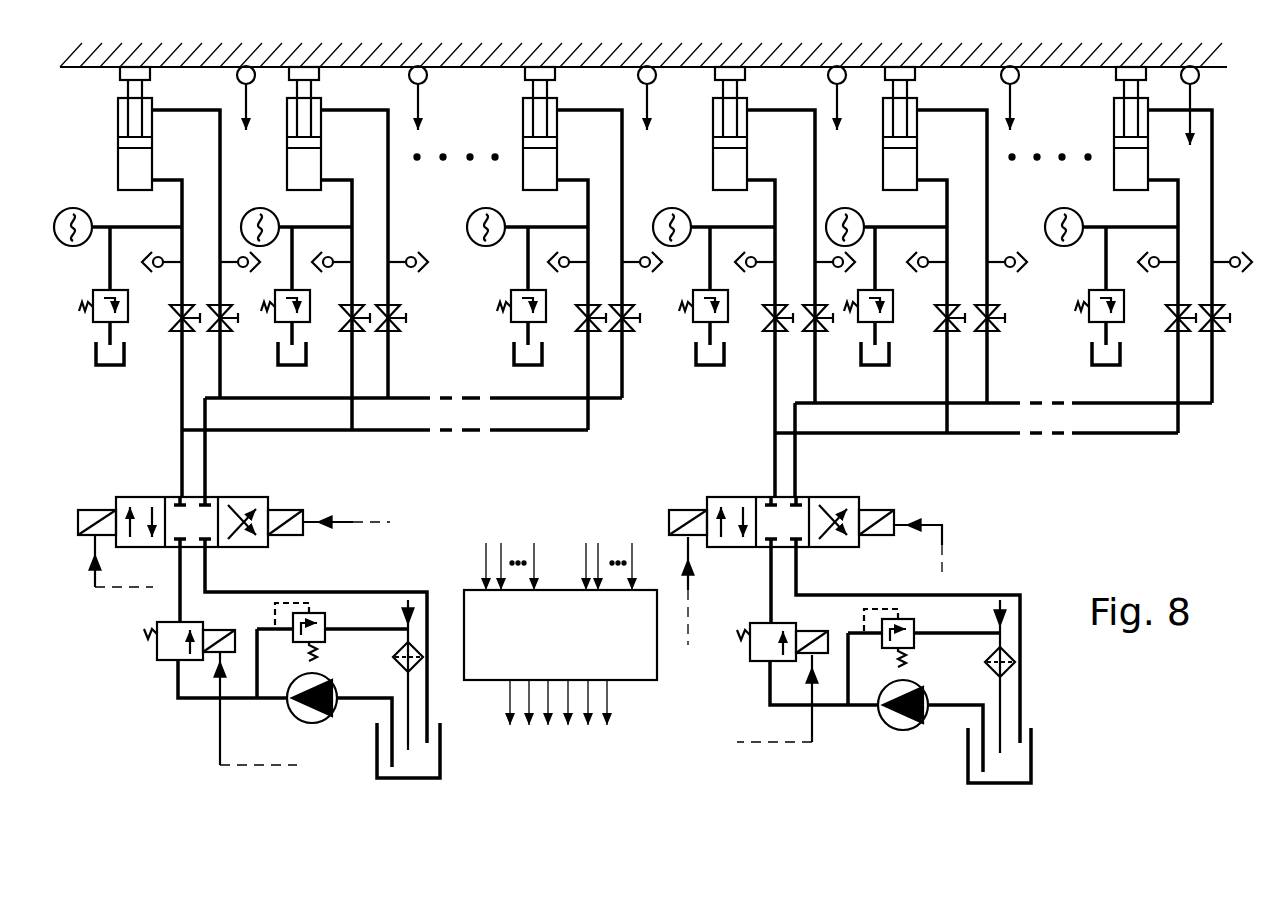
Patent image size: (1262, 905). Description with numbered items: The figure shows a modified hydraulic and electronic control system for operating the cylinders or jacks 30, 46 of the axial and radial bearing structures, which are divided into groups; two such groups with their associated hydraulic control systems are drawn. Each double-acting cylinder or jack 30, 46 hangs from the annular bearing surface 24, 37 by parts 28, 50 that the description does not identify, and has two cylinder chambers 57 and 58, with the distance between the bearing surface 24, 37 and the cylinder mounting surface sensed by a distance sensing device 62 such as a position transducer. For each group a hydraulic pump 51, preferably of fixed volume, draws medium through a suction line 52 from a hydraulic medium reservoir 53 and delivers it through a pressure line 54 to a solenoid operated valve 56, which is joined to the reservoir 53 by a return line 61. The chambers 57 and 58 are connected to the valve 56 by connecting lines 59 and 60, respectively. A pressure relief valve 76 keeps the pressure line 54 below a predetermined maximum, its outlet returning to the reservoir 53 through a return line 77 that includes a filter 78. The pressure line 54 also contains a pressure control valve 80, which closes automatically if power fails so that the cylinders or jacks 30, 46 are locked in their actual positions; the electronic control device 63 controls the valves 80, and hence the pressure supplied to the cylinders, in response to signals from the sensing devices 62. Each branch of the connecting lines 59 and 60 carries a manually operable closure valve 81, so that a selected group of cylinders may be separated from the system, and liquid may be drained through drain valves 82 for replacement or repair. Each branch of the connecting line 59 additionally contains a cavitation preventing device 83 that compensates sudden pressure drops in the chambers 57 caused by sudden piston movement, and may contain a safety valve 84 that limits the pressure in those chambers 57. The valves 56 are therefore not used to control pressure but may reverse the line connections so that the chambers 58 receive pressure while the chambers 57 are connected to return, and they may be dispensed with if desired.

The annular bearing surface 24 is at (629, 73).
The annular bearing surface 37 is at (117, 70).
The piston rod 28 is at (633, 96).
The piston rod 50 is at (152, 74).
The cylinder or jack 30 is at (587, 144).
The cylinder or jack 46 is at (118, 148).
The cylinder chamber 57 is at (118, 180).
The cylinder chamber 58 is at (118, 122).
The connecting line 59 is at (181, 208).
The connecting line 60 is at (219, 147).
The return line 61 is at (428, 700).
The distance sensing device 62 is at (250, 80).
The electronic control device 63 is at (628, 680).
The hydraulic pump 51 is at (292, 715).
The suction line 52 is at (372, 698).
The hydraulic medium reservoir 53 is at (440, 750).
The pressure line 54 is at (205, 698).
The solenoid operated valve 56 is at (240, 497).
The pressure relief valve 76 is at (325, 618).
The return line 77 is at (395, 685).
The filter 78 is at (393, 657).
The pressure control valve 80 is at (157, 628).
The closure valve 81 is at (190, 306).
The drain valve 82 is at (146, 270).
The cavitation preventing device 83 is at (73, 246).
The safety valve 84 is at (93, 298).